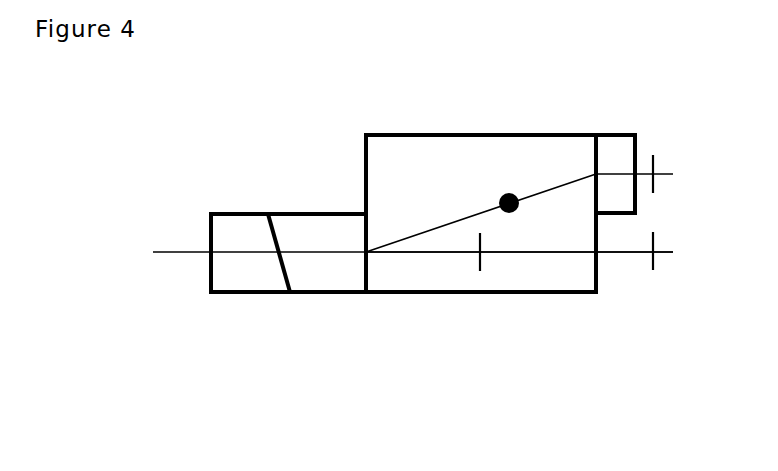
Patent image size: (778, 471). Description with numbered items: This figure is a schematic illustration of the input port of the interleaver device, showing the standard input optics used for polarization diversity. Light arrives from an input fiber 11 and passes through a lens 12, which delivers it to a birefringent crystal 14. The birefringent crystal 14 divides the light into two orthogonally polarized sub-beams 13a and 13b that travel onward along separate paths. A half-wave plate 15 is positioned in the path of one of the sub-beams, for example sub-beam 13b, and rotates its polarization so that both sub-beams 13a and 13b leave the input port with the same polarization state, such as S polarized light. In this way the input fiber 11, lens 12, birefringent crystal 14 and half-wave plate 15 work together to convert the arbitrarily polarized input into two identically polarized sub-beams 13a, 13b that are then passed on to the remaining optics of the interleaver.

The input fiber 11 is at (172, 252).
The lens 12 is at (308, 293).
The sub-beam 13a is at (518, 252).
The sub-beam 13b is at (482, 212).
The birefringent crystal 14 is at (422, 155).
The half-wave plate 15 is at (615, 153).